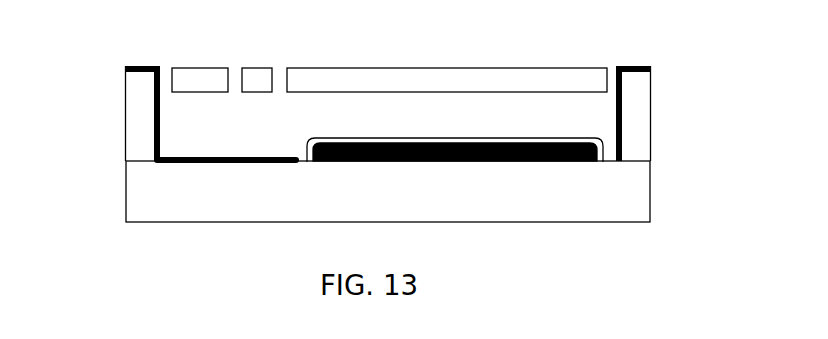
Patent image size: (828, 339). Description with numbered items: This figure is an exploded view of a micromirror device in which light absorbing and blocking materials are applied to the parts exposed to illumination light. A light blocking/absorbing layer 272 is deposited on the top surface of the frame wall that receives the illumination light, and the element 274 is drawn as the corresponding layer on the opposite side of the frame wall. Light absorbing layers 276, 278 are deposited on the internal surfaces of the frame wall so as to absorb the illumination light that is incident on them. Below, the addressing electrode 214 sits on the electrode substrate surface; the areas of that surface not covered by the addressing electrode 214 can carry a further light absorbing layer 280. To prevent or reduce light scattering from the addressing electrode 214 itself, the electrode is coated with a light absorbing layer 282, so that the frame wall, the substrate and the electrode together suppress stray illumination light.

The addressing electrode 214 is at (452, 162).
The light blocking/absorbing layer 272 is at (140, 65).
The right conductive post 274 is at (637, 65).
The light absorbing layer 276 is at (155, 135).
The light absorbing layer 278 is at (620, 142).
The light absorbing layer 280 is at (225, 156).
The light absorbing layer 282 is at (432, 142).